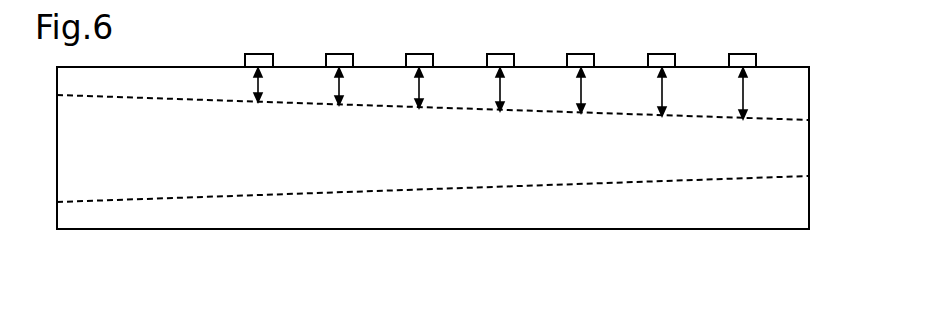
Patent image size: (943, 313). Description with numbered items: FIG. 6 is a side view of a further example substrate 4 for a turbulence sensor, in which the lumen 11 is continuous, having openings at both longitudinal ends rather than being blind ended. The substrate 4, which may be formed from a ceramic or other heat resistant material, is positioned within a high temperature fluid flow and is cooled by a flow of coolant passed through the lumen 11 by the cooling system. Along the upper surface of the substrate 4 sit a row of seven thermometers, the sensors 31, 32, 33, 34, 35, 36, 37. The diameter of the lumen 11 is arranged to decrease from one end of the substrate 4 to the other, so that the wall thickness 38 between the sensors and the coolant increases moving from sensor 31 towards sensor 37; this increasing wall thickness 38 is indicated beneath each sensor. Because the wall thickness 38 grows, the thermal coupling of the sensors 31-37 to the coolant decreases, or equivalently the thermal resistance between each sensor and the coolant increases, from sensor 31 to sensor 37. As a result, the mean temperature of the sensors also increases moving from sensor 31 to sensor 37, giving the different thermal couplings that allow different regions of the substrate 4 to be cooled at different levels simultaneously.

The substrate 4 is at (480, 218).
The lumen 11 is at (147, 175).
The sensor 31 is at (259, 57).
The sensor 32 is at (340, 57).
The sensor 33 is at (420, 57).
The sensor 34 is at (501, 57).
The sensor 35 is at (581, 57).
The sensor 36 is at (662, 57).
The sensor 37 is at (743, 57).
The wall thickness 38 is at (517, 93).